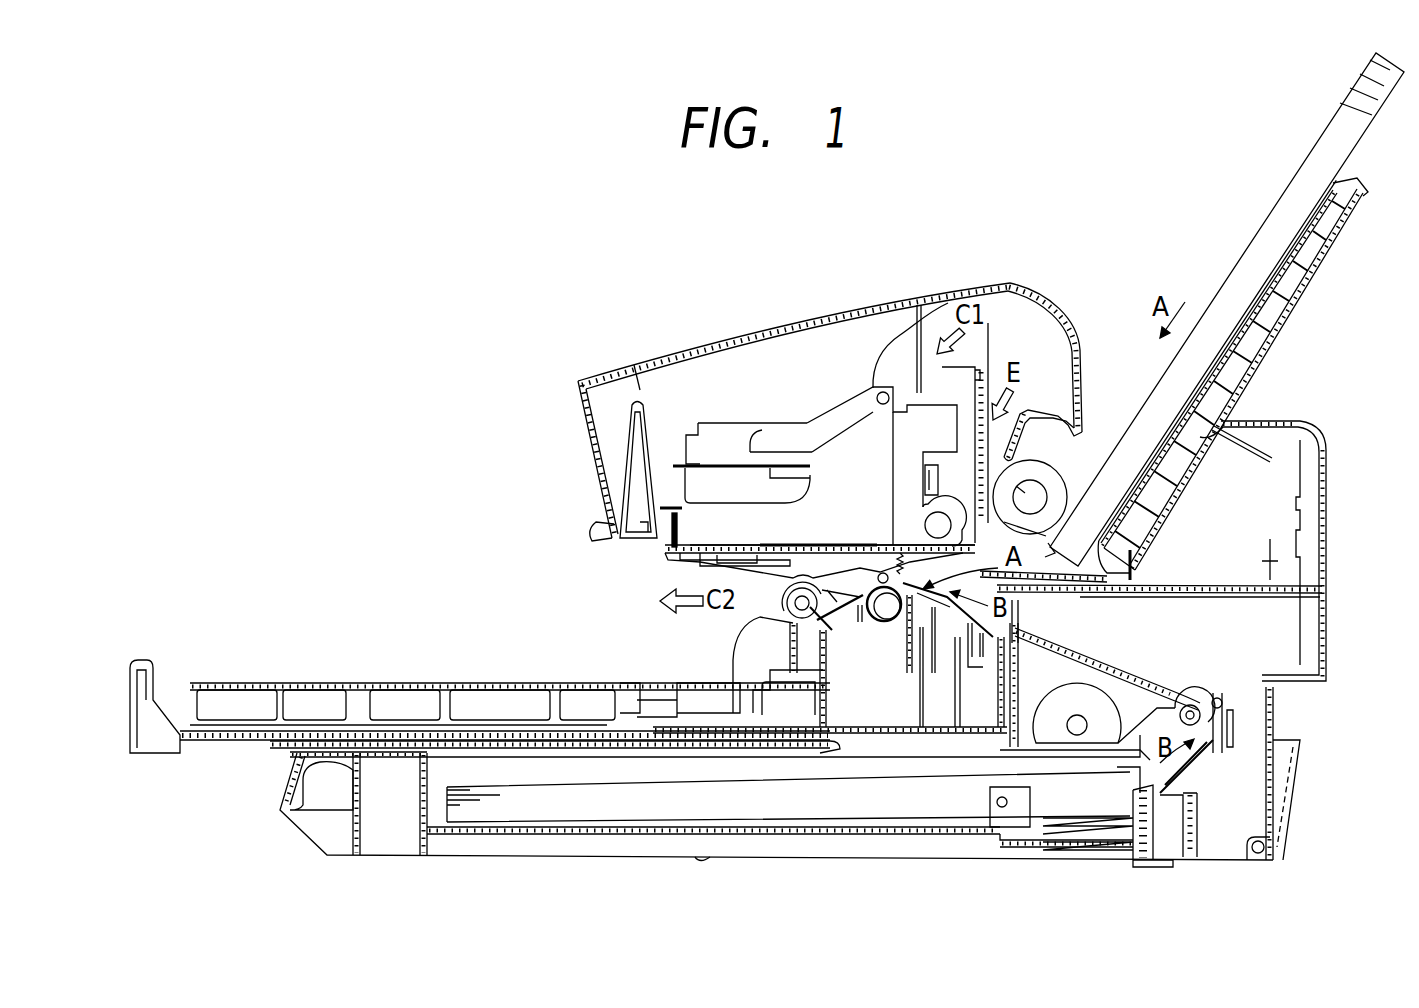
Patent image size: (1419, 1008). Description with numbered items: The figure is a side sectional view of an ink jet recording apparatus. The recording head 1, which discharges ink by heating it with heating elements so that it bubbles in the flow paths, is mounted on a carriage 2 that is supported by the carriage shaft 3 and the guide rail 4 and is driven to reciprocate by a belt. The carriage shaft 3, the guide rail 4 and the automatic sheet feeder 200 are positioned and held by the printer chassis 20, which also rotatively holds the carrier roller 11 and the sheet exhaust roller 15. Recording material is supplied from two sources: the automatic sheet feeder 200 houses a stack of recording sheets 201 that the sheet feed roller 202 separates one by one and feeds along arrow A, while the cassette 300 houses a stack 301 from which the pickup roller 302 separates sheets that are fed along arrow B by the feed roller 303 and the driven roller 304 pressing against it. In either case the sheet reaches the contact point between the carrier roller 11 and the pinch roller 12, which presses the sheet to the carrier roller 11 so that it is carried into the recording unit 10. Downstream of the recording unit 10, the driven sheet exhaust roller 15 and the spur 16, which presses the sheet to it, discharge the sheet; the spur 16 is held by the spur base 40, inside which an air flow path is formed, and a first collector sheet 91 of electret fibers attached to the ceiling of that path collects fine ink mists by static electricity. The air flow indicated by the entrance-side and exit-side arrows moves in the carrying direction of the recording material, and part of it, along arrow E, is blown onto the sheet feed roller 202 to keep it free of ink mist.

The recording head 1 is at (712, 477).
The carriage 2 is at (850, 442).
The carriage shaft 3 is at (937, 523).
The guide rail 4 is at (670, 550).
The recording unit 10 is at (841, 600).
The carrier roller 11 is at (893, 620).
The pinch roller 12 is at (876, 620).
The sheet exhaust roller 15 is at (770, 618).
The spur 16 is at (777, 612).
The printer chassis 20 is at (973, 395).
The spur base 40 is at (730, 565).
The first collector sheet 91 is at (740, 557).
The automatic sheet feeder 200 is at (1293, 288).
The recording sheets 201 is at (1367, 92).
The sheet feed roller 202 is at (1055, 487).
The cassette 300 is at (597, 843).
The recording sheets 301 is at (535, 815).
The pickup roller 302 is at (1043, 731).
The feed roller 303 is at (1200, 718).
The driven roller 304 is at (1224, 700).